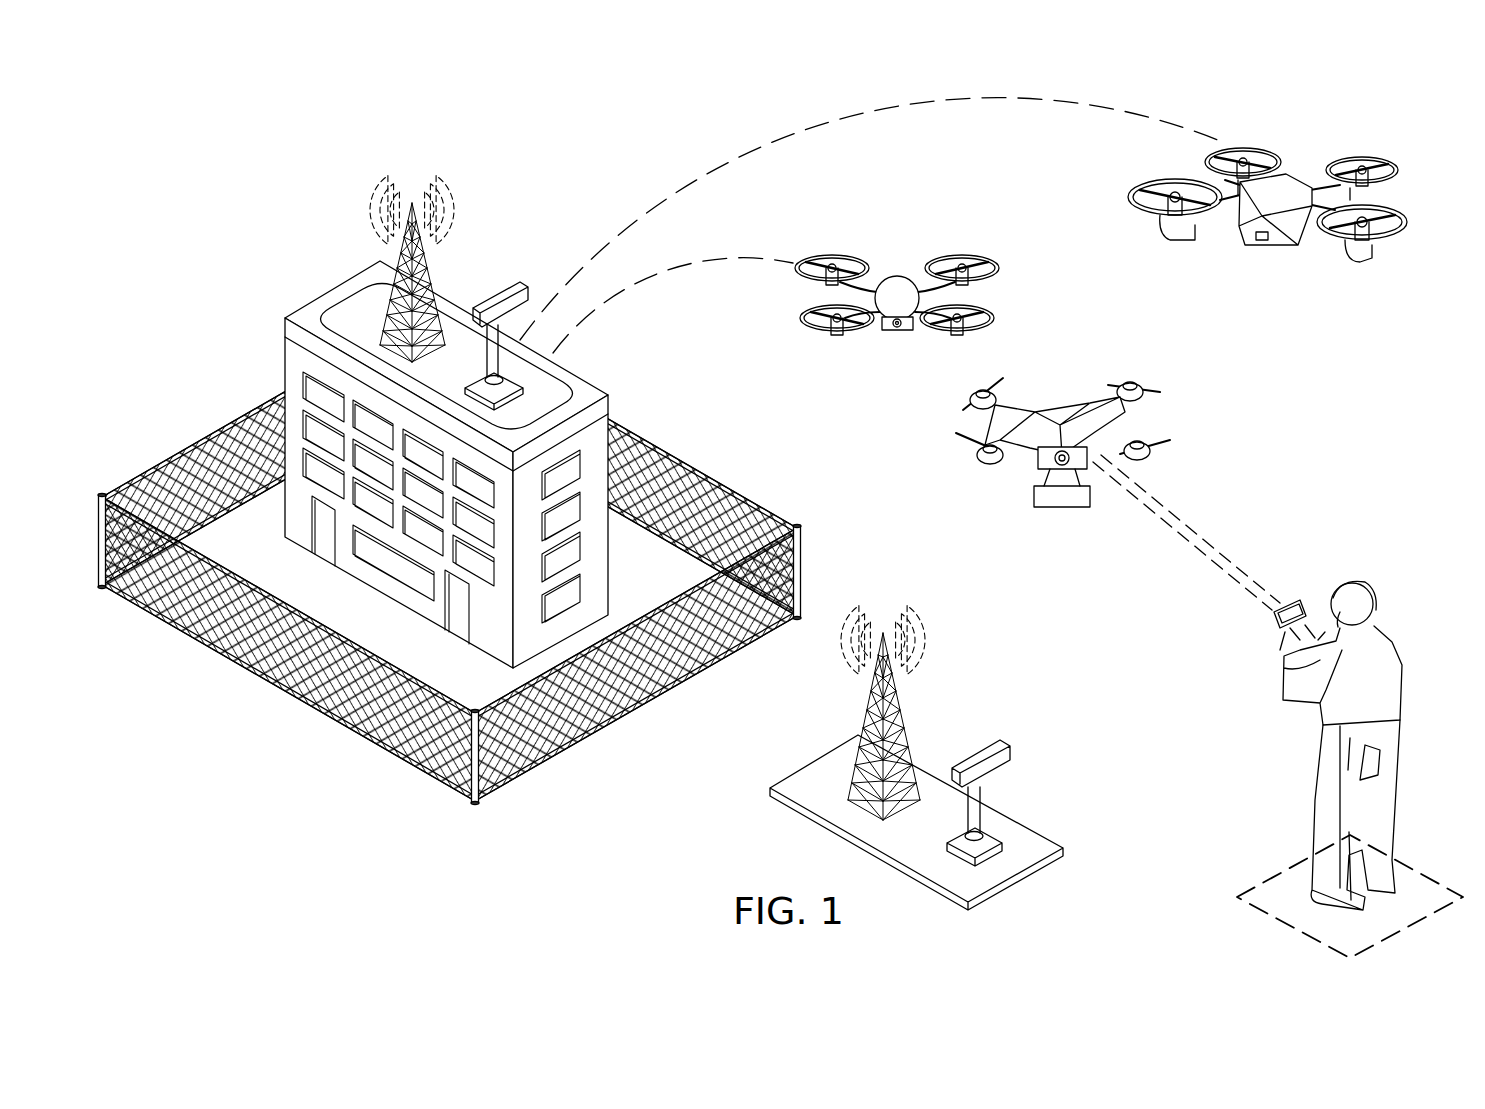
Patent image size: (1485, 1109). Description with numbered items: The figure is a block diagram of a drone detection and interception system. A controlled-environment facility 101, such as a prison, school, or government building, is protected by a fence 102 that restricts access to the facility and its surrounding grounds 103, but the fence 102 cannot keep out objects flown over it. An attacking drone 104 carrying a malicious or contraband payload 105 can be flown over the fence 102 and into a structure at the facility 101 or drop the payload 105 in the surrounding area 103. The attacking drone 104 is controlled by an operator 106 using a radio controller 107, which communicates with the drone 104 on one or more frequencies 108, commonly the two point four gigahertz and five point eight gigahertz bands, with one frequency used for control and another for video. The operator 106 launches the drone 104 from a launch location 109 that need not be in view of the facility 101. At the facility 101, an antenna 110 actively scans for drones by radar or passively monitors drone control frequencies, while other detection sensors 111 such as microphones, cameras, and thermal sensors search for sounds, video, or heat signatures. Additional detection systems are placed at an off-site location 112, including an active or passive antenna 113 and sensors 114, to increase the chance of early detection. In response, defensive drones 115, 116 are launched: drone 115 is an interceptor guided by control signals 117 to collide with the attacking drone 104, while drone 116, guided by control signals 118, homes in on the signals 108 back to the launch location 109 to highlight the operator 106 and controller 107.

The controlled-environment facility 101 is at (283, 367).
The fence 102 is at (172, 456).
The surrounding grounds 103 is at (272, 576).
The attacking drone 104 is at (1150, 455).
The payload 105 is at (1034, 494).
The operator 106 is at (1403, 672).
The radio controller 107 is at (1268, 628).
The frequencies 108 is at (1218, 550).
The launch location 109 is at (1272, 876).
The antenna 110 is at (400, 250).
The detection sensors 111 is at (480, 283).
The off-site location 112 is at (768, 790).
The antenna 113 is at (862, 728).
The sensors 114 is at (975, 752).
The defensive drone 115 is at (892, 333).
The defensive drone 116 is at (1270, 247).
The control signals 117 is at (672, 268).
The control signals 118 is at (783, 140).